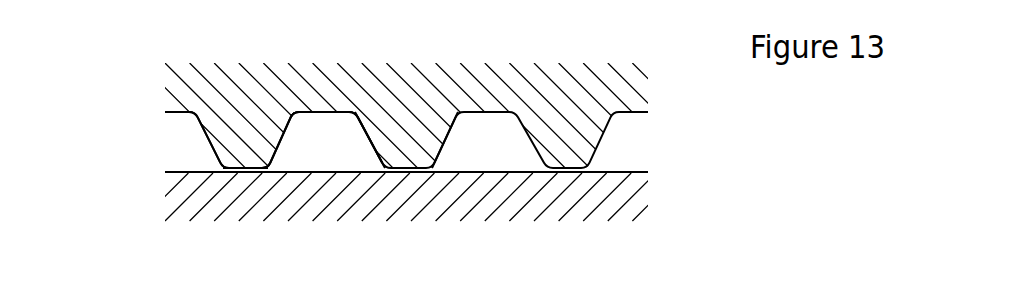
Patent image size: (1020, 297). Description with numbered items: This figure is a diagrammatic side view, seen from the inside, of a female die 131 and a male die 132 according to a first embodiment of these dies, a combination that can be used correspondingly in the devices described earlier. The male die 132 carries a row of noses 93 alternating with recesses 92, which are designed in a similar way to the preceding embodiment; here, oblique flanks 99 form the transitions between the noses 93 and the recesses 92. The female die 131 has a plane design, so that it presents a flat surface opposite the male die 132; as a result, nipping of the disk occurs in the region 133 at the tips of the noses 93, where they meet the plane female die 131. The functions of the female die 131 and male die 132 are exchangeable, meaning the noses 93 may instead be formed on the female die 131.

The recess 92 is at (323, 154).
The nose 93 is at (225, 140).
The oblique flank 99 is at (438, 128).
The female die 131 is at (570, 207).
The male die 132 is at (568, 99).
The region at the tips of the noses 133 is at (247, 172).